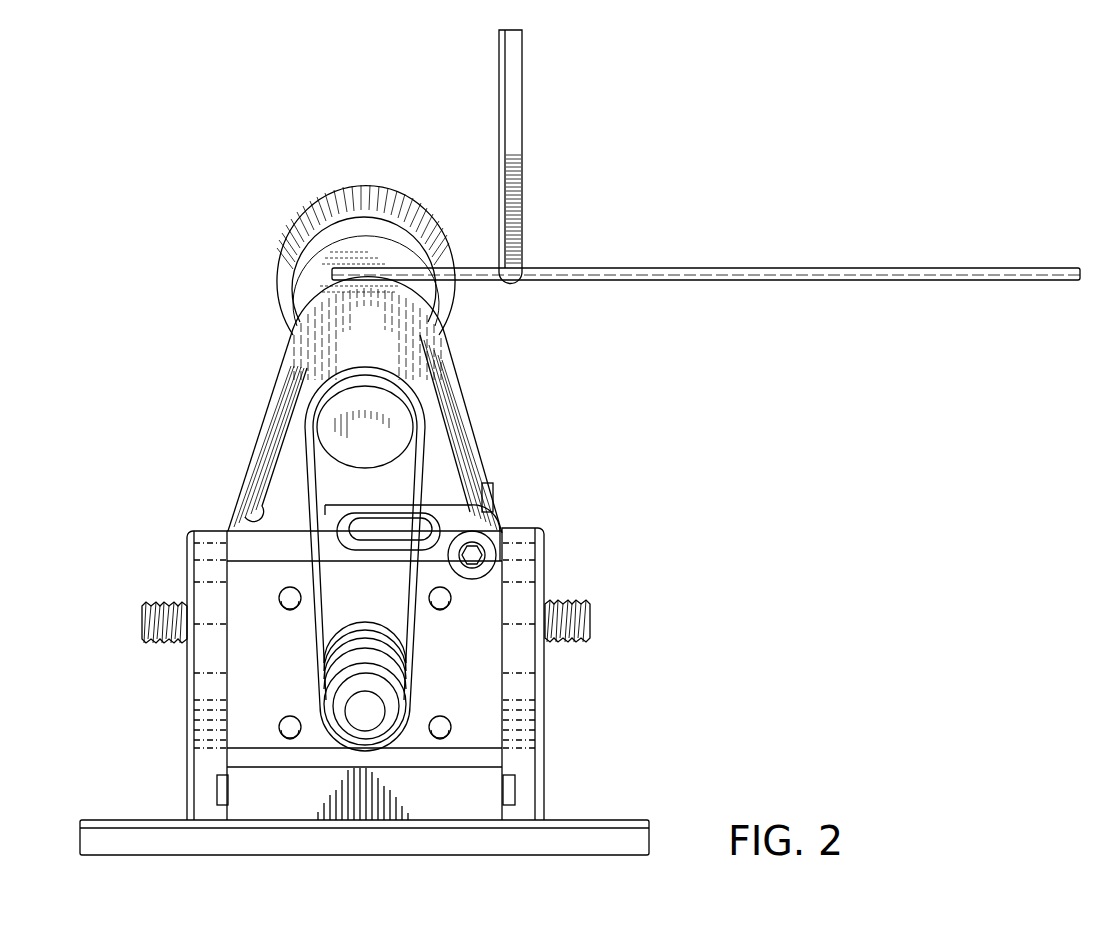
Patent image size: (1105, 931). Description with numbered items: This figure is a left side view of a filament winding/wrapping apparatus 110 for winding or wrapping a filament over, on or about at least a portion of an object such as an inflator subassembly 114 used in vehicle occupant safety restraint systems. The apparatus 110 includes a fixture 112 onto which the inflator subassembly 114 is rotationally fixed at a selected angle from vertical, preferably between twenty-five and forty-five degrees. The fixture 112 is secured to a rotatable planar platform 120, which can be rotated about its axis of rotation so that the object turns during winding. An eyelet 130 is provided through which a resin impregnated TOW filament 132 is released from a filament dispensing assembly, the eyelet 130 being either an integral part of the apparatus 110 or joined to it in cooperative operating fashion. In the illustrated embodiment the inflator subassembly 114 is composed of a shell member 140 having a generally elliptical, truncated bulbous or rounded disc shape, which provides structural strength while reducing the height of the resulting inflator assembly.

The filament winding/wrapping apparatus 110 is at (583, 172).
The fixture 112 is at (368, 284).
The inflator subassembly 114 is at (305, 222).
The rotatable planar platform 120 is at (620, 781).
The eyelet 130 is at (515, 284).
The resin impregnated TOW filament 132 is at (623, 283).
The shell member 140 is at (410, 212).